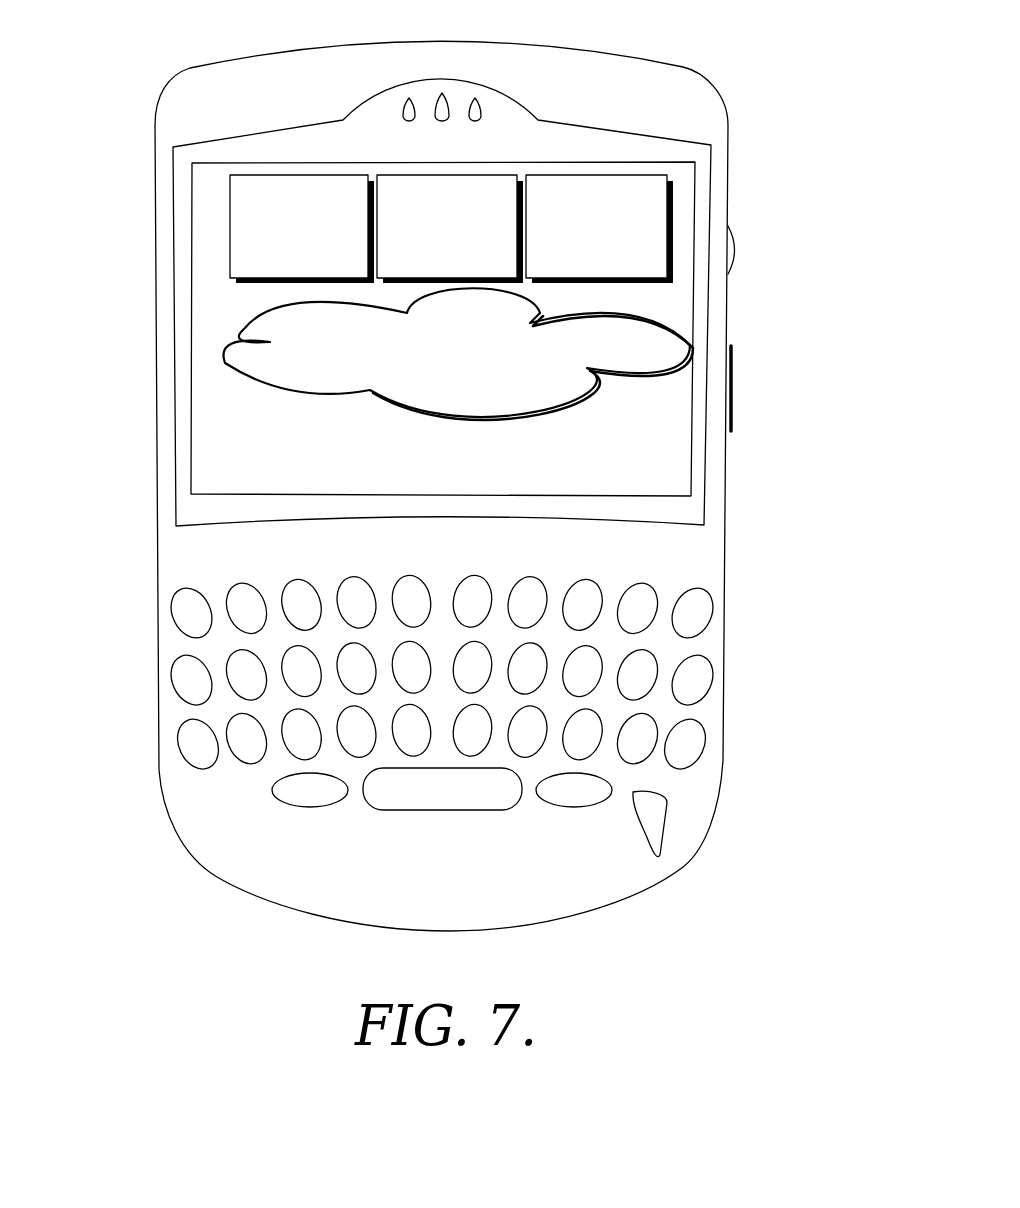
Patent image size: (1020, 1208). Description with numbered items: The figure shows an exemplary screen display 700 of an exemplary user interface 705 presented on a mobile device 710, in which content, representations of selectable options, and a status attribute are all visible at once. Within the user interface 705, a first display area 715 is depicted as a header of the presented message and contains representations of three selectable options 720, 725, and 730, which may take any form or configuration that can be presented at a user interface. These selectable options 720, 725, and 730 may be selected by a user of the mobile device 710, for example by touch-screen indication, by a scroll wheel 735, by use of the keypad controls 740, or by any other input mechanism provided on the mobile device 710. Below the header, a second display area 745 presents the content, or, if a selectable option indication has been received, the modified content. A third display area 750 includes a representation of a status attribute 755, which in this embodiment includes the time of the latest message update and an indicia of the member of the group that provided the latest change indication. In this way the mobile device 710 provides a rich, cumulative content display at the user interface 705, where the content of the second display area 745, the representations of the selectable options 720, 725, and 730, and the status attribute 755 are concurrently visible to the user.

The screen display 700 is at (124, 385).
The user interface 705 is at (191, 232).
The mobile device 710 is at (253, 56).
The first display area 715 is at (526, 205).
The selectable option 720 is at (592, 175).
The selectable option 725 is at (442, 175).
The selectable option 730 is at (297, 175).
The scroll wheel 735 is at (737, 258).
The keypad controls 740 is at (758, 580).
The second display area 745 is at (758, 272).
The third display area 750 is at (758, 400).
The status attribute 755 is at (388, 90).